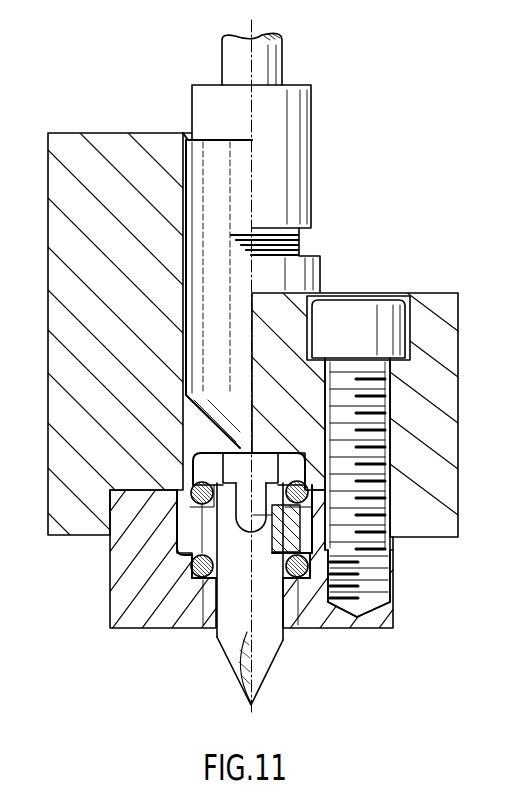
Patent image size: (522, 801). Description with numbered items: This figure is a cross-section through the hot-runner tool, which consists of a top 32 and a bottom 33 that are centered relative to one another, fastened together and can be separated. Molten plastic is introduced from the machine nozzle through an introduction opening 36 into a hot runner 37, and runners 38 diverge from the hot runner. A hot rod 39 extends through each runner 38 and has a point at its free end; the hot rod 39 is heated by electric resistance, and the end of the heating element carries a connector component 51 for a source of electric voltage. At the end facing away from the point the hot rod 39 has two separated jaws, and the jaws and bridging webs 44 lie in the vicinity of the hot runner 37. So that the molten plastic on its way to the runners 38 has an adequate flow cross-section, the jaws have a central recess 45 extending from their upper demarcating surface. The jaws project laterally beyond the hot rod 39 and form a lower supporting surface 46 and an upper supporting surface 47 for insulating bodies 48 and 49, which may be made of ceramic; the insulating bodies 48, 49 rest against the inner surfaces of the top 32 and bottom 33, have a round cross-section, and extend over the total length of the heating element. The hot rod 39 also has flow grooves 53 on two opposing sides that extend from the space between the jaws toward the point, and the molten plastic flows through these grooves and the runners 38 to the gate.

The top 32 is at (112, 167).
The bottom 33 is at (160, 610).
The introduction opening 36 is at (244, 447).
The hot runner 37 is at (303, 470).
The runner 38 is at (294, 600).
The hot rod 39 is at (258, 608).
The bridging web 44 is at (386, 583).
The central recess 45 is at (386, 554).
The lower supporting surface 46 is at (175, 540).
The upper supporting surface 47 is at (210, 536).
The insulating body 48 is at (190, 486).
The insulating body 49 is at (194, 578).
The connector component 51 is at (203, 513).
The flow groove 53 is at (232, 630).